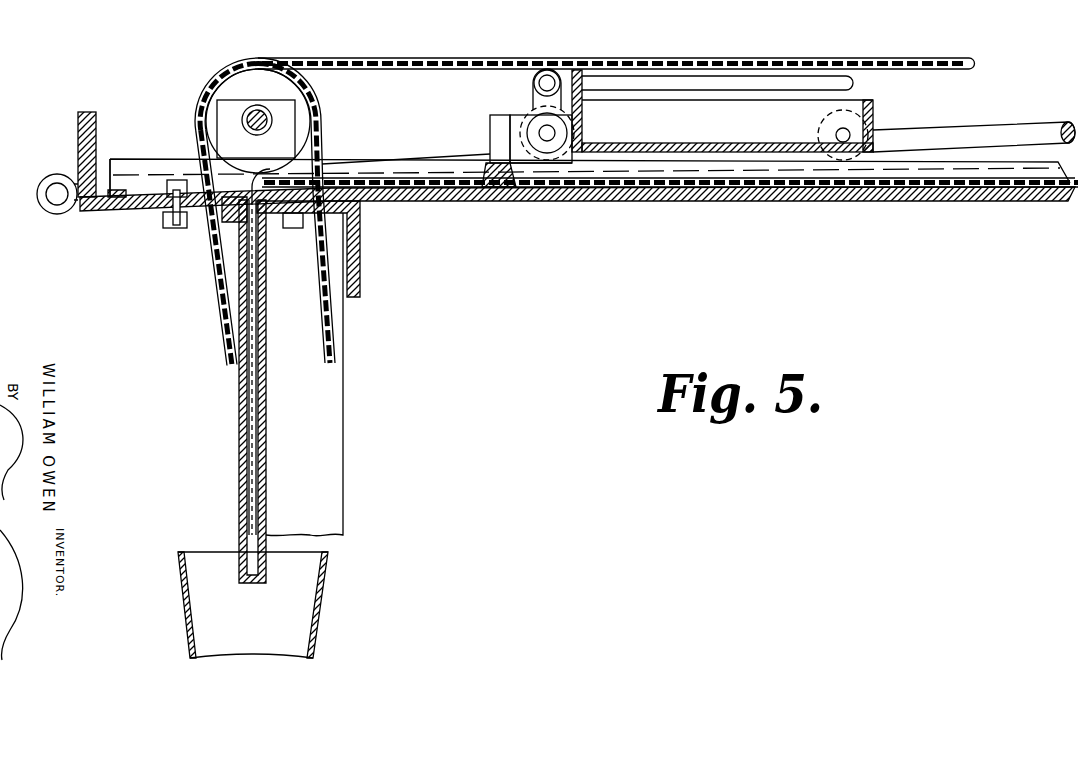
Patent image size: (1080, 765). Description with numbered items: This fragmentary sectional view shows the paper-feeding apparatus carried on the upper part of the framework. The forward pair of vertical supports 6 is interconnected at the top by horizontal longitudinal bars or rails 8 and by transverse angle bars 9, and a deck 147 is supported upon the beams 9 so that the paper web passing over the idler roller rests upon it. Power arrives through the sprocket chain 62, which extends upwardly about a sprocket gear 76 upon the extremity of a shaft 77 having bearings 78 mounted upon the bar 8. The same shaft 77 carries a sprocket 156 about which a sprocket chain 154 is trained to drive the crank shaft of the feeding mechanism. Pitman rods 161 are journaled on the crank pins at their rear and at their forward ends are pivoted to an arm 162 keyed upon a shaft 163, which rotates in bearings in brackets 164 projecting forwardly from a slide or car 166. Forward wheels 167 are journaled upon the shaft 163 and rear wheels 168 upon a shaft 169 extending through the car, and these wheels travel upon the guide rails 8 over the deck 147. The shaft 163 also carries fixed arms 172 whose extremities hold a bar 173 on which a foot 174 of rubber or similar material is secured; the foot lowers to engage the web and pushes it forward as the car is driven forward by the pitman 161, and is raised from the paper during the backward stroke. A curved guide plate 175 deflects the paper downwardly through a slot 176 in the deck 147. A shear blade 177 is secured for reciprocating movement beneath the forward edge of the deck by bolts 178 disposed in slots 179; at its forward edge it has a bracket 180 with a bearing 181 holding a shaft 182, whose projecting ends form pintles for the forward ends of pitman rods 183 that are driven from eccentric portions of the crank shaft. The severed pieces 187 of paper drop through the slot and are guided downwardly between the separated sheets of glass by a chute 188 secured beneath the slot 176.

The forward pair of vertical supports 6 is at (343, 415).
The longitudinal bars or rails 8 is at (372, 162).
The transverse angle bars 9 is at (362, 250).
The sprocket chain 62 is at (215, 278).
The sprocket gear 76 is at (212, 76).
The shaft 77 is at (272, 120).
The bearings 78 is at (233, 110).
The deck 147 is at (940, 200).
The sprocket chain 154 is at (856, 62).
The sprocket 156 is at (300, 64).
The pitman rods 161 is at (705, 80).
The arm 162 is at (536, 92).
The shaft 163 is at (549, 133).
The brackets 164 is at (580, 125).
The slide or car 166 is at (722, 129).
The forward wheels 167 is at (545, 160).
The rear wheels 168 is at (876, 116).
The shaft 169 is at (840, 148).
The fixed arms 172 is at (490, 128).
The bar 173 is at (488, 163).
The foot 174 is at (495, 188).
The curved guide plate 175 is at (258, 172).
The slot 176 is at (172, 213).
The shear blade 177 is at (128, 196).
The bolts 178 is at (222, 260).
The slots 179 is at (135, 195).
The bracket 180 is at (88, 112).
The bearing 181 is at (75, 172).
The shaft 182 is at (57, 201).
The pitman rods 183 is at (1000, 128).
The severed pieces of paper 187 is at (255, 355).
The chute 188 is at (240, 413).